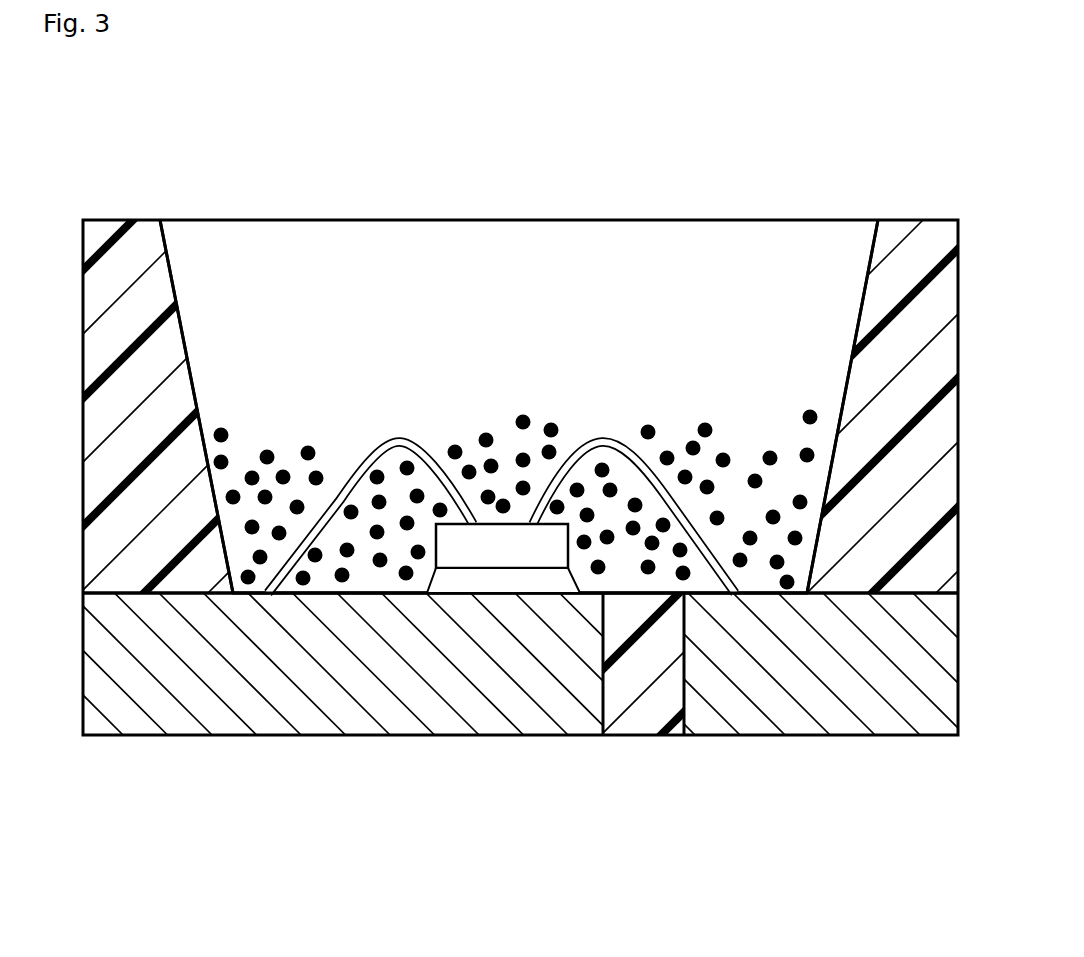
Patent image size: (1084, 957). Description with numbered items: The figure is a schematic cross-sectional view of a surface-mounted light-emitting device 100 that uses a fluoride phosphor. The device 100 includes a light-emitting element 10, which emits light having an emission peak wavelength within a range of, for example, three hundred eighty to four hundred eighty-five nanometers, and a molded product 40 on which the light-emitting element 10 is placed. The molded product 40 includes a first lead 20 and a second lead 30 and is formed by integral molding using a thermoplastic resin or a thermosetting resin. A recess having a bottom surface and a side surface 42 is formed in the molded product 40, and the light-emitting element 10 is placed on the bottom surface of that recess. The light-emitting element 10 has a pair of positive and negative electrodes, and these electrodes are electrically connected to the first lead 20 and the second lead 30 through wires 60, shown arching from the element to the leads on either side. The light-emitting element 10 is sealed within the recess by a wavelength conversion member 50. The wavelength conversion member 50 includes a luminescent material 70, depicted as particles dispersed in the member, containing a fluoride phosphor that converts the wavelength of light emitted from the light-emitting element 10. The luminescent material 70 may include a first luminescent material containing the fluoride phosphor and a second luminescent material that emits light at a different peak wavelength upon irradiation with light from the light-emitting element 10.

The light-emitting device 100 is at (220, 826).
The light-emitting element 10 is at (510, 545).
The first lead 20 is at (538, 683).
The second lead 30 is at (752, 710).
The molded product 40 is at (950, 843).
The side surface 42 is at (897, 540).
The wavelength conversion member 50 is at (390, 268).
The wires 60 is at (603, 440).
The luminescent material 70 is at (267, 450).